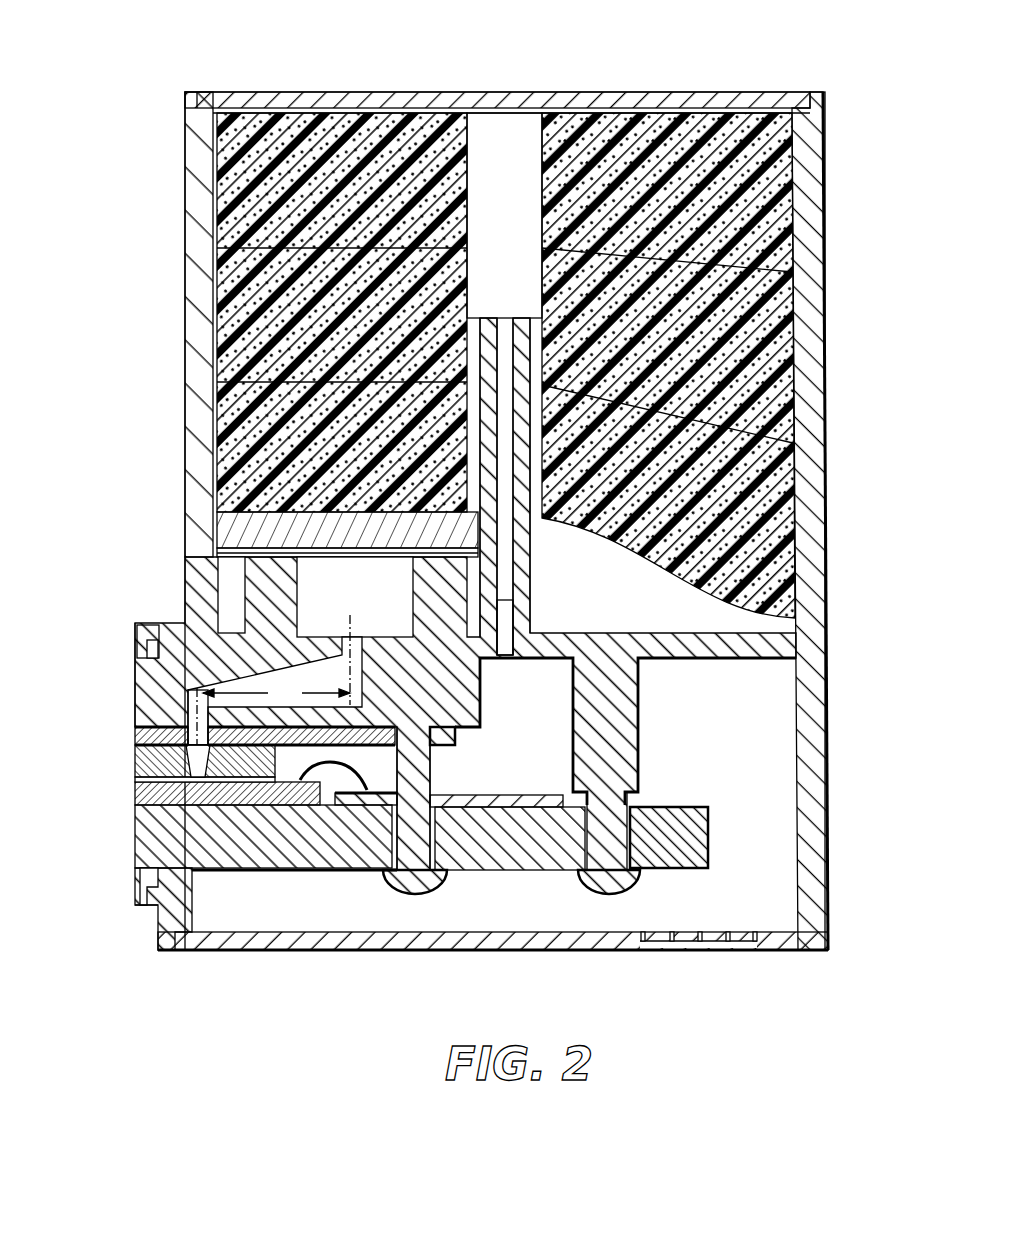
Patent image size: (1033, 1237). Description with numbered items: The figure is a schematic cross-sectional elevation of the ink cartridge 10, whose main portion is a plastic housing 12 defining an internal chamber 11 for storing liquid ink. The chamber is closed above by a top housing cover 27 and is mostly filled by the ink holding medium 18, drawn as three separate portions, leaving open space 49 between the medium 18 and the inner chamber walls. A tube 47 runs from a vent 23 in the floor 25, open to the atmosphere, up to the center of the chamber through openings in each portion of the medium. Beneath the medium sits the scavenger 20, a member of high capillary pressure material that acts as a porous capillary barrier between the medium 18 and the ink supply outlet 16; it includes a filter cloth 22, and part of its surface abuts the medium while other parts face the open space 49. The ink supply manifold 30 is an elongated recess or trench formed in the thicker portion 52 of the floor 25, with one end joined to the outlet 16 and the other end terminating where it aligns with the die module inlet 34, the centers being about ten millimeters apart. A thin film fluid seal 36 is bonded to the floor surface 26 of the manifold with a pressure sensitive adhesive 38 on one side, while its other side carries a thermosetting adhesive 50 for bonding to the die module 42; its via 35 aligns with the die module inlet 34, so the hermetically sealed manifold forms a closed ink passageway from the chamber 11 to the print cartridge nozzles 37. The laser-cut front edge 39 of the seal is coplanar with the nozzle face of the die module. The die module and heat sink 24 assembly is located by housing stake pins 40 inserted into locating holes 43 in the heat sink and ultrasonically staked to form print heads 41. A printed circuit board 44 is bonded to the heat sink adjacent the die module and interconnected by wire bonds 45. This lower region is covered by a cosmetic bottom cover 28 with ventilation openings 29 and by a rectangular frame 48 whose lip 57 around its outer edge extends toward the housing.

The cartridge 10 is at (655, 50).
The internal chamber 11 is at (782, 203).
The housing 12 is at (824, 385).
The ink supply outlet 16 is at (352, 640).
The ink holding medium 18 is at (215, 178).
The scavenger 20 is at (217, 527).
The filter cloth 22 is at (217, 552).
The vent 23 is at (505, 652).
The heat sink 24 is at (712, 845).
The floor 25 is at (675, 633).
The floor surface of the manifold 26 is at (462, 730).
The top housing cover 27 is at (360, 92).
The cosmetic bottom cover 28 is at (545, 950).
The ventilation openings 29 is at (734, 950).
The ink supply manifold 30 is at (313, 672).
The die module inlet 34 is at (135, 727).
The via 35 is at (197, 750).
The fluid seal 36 is at (447, 747).
The print cartridge nozzles 37 is at (135, 770).
The pressure sensitive adhesive 38 is at (140, 723).
The front edge 39 is at (135, 733).
The stake pins 40 is at (640, 720).
The print heads 41 is at (397, 885).
The die module 42 is at (135, 795).
The locating holes 43 is at (437, 850).
The printed circuit board 44 is at (532, 793).
The wire bonds 45 is at (313, 790).
The tube 47 is at (530, 565).
The frame 48 is at (135, 880).
The open space 49 is at (505, 133).
The thermosetting adhesive 50 is at (338, 743).
The thicker portion 52 is at (477, 690).
The lip 57 is at (140, 905).